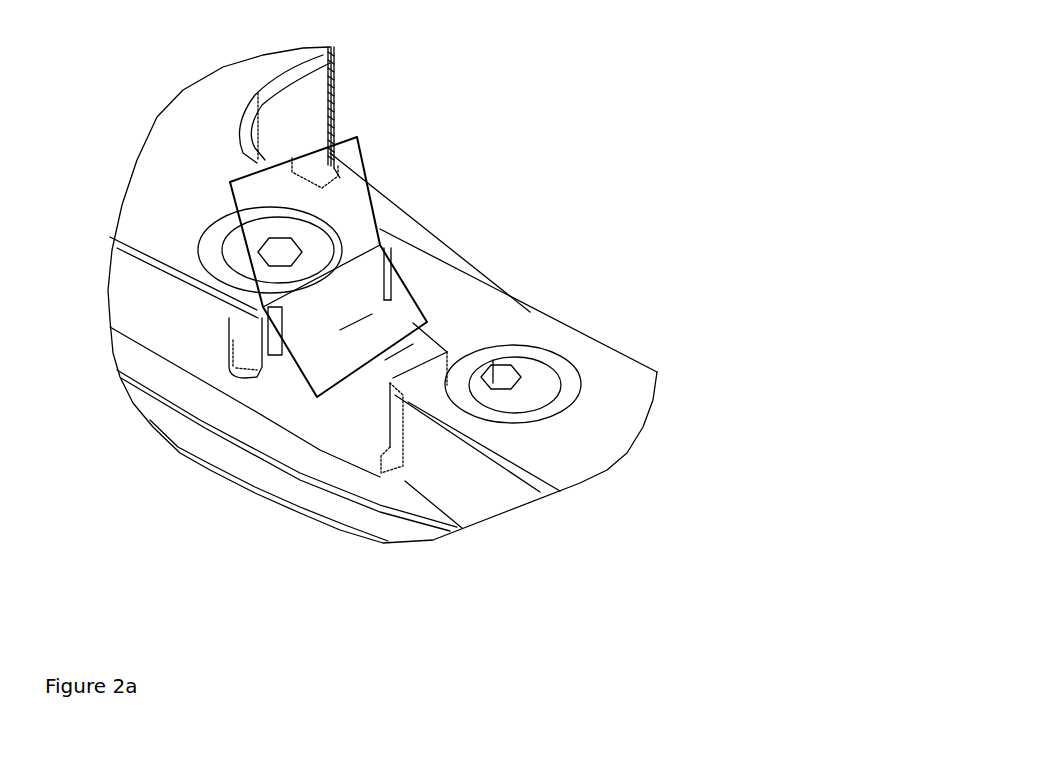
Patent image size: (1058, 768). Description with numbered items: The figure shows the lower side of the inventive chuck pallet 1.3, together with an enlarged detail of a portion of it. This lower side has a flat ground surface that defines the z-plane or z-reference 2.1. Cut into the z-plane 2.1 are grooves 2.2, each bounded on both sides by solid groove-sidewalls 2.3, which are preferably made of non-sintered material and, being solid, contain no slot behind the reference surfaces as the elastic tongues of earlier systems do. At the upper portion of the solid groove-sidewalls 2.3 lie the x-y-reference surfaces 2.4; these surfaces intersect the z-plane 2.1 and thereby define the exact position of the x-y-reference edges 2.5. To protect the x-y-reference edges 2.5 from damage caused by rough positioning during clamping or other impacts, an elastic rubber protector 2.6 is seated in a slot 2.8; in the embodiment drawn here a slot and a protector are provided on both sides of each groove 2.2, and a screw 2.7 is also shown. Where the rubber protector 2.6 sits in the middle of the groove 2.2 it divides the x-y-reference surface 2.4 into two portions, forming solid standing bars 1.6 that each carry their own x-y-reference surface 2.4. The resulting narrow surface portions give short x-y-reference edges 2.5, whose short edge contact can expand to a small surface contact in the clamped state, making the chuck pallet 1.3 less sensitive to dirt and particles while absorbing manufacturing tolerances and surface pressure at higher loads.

The chuck pallet 1.3 is at (664, 504).
The solid standing bar 1.6 is at (383, 245).
The z-plane, z-reference 2.1 is at (613, 395).
The groove 2.2 is at (399, 352).
The solid groove sidewalls 2.3 is at (357, 322).
The x-y-reference surfaces 2.4 is at (317, 397).
The x-y-reference edges 2.5 is at (357, 137).
The rubber protector 2.6 is at (218, 233).
The screw 2.7 is at (534, 373).
The slot 2.8 is at (533, 408).